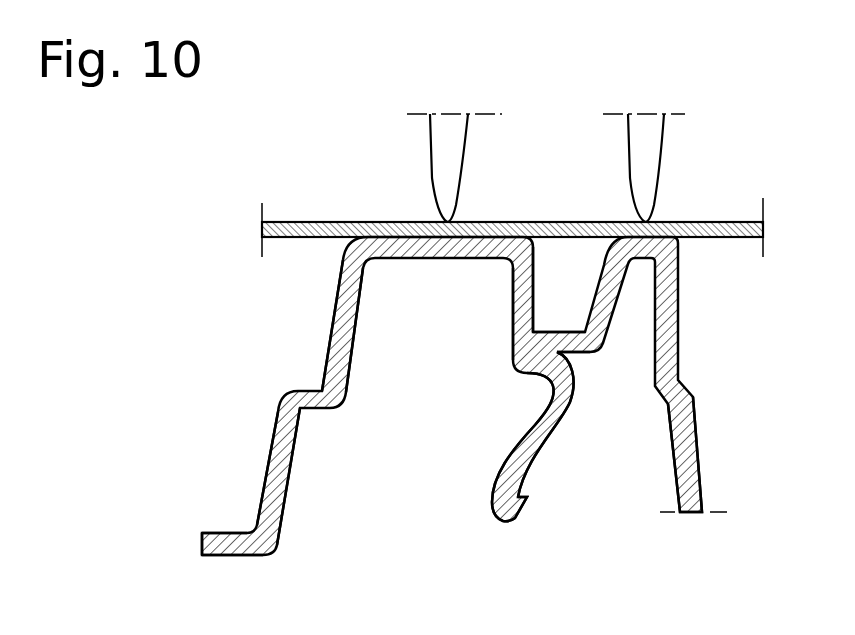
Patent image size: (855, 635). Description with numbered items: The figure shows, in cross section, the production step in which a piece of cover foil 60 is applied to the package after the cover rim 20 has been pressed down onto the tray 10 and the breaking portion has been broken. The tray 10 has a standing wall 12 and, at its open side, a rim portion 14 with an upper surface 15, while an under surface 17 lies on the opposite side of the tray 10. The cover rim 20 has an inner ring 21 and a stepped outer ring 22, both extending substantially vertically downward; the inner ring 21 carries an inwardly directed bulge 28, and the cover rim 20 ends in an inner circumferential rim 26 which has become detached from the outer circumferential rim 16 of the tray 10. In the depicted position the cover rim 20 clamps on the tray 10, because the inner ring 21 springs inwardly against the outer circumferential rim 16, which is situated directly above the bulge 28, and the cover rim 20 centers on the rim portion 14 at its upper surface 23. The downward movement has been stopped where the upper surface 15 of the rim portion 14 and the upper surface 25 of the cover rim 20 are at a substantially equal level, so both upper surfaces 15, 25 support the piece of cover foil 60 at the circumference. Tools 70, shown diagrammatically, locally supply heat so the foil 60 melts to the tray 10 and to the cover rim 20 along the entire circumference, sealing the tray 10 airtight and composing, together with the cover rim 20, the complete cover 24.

The tray 10 is at (678, 316).
The standing wall 12 is at (690, 467).
The rim portion 14 is at (623, 342).
The upper surface 15 is at (669, 223).
The outer circumferential rim 16 is at (554, 330).
The under surface 17 is at (652, 362).
The cover rim 20 is at (330, 307).
The inner ring 21 is at (515, 317).
The outer ring 22 is at (268, 478).
The upper surface 23 is at (553, 222).
The cover 24 is at (350, 204).
The upper surface 25 is at (423, 222).
The inner circumferential rim 26 is at (513, 520).
The bulge 28 is at (565, 384).
The piece of cover foil 60 is at (733, 228).
The tools 70 is at (637, 133).